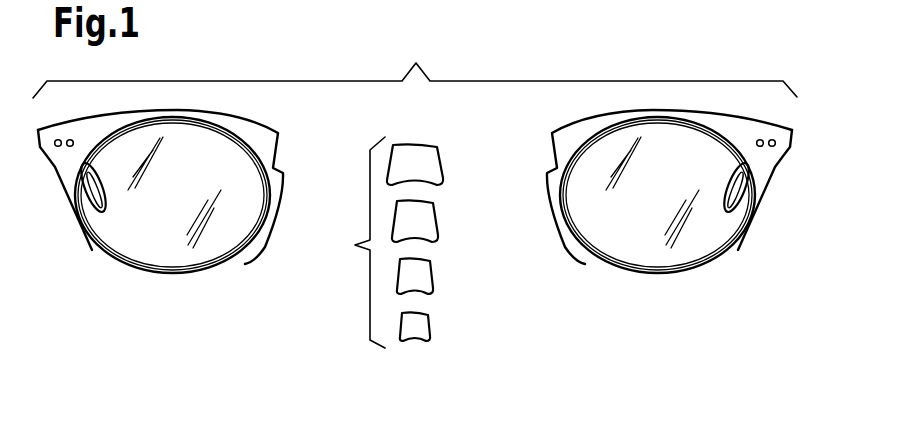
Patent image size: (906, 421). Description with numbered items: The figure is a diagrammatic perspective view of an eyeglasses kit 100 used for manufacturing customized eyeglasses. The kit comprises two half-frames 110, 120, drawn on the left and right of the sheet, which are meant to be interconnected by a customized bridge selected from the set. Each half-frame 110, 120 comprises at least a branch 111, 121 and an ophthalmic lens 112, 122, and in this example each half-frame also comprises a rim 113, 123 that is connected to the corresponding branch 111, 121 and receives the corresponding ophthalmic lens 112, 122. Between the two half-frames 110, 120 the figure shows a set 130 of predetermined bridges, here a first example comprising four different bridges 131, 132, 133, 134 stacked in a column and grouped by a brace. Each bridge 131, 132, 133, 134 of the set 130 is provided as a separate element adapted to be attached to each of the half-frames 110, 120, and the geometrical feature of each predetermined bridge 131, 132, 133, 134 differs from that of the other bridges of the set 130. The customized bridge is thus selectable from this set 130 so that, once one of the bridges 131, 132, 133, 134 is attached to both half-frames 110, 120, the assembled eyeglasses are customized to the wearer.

The eyeglasses kit 100 is at (415, 65).
The half-frame 110 is at (185, 246).
The branch 111 is at (105, 200).
The ophthalmic lens 112 is at (232, 217).
The rim 113 is at (233, 264).
The half-frame 120 is at (656, 247).
The branch 121 is at (723, 190).
The ophthalmic lens 122 is at (620, 243).
The rim 123 is at (692, 272).
The set of bridges 130 is at (416, 228).
The predetermined bridge 131 is at (430, 162).
The predetermined bridge 132 is at (428, 224).
The predetermined bridge 133 is at (425, 275).
The predetermined bridge 134 is at (422, 326).